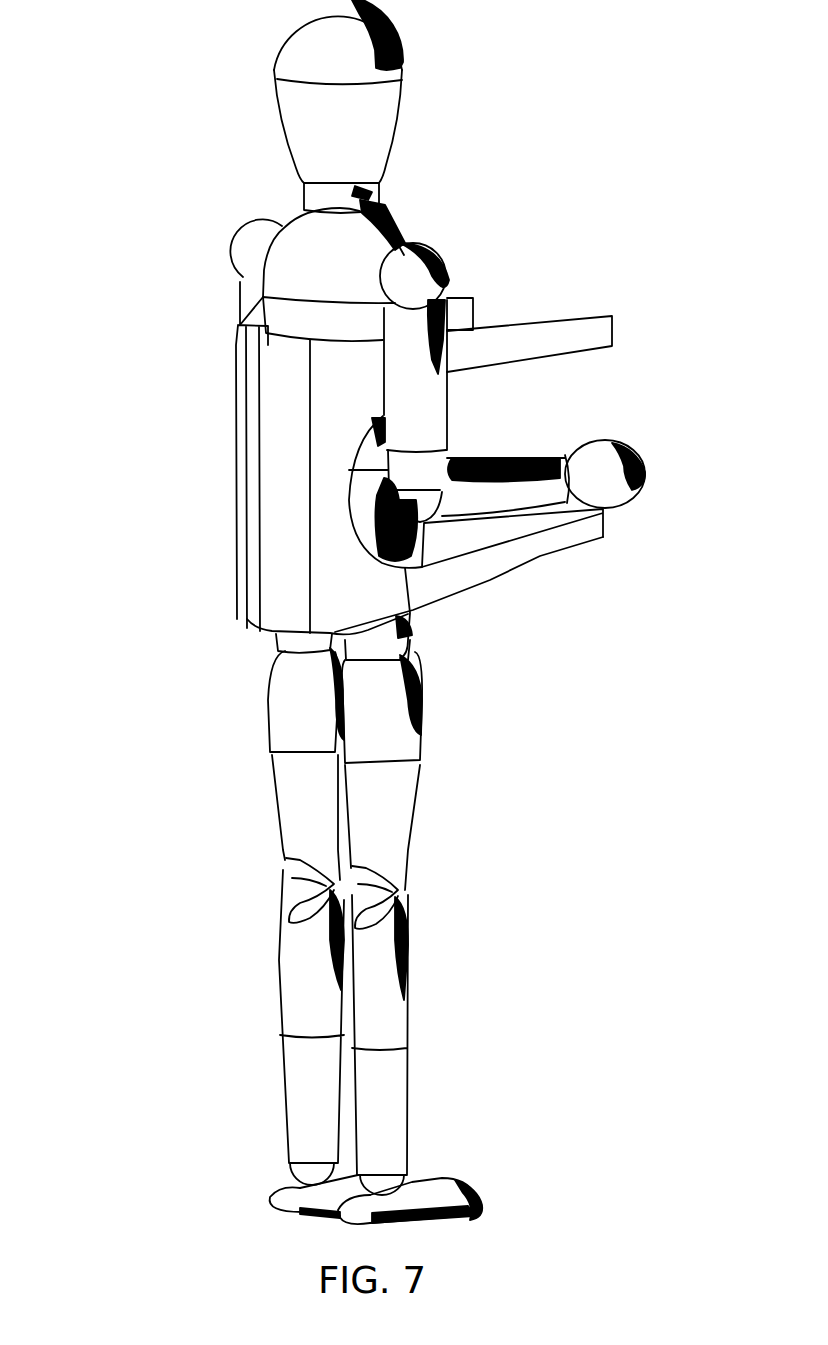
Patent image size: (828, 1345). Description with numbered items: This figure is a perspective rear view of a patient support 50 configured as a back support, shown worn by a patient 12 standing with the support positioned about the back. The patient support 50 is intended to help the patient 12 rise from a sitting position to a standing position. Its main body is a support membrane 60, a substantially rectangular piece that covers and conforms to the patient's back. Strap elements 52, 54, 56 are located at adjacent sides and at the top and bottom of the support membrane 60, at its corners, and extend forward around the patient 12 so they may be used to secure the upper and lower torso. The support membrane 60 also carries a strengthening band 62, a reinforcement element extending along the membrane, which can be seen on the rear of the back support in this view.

The patient 12 is at (246, 65).
The patient support 50 is at (160, 345).
The strap element 52 is at (463, 304).
The strap element 54 is at (600, 332).
The strap element 56 is at (606, 521).
The support membrane 60 is at (242, 430).
The strengthening band 62 is at (278, 545).